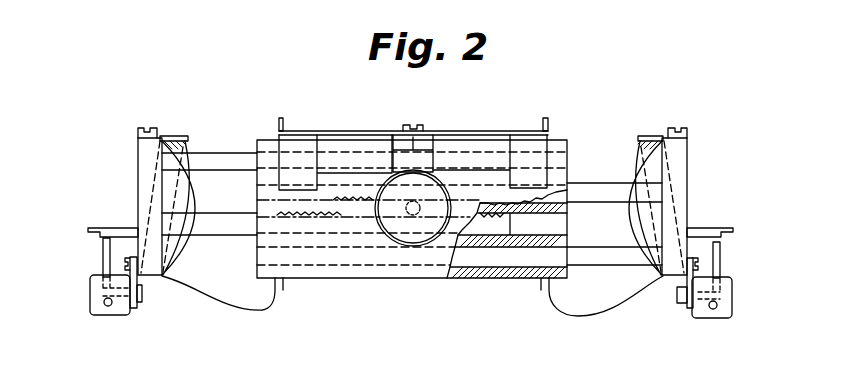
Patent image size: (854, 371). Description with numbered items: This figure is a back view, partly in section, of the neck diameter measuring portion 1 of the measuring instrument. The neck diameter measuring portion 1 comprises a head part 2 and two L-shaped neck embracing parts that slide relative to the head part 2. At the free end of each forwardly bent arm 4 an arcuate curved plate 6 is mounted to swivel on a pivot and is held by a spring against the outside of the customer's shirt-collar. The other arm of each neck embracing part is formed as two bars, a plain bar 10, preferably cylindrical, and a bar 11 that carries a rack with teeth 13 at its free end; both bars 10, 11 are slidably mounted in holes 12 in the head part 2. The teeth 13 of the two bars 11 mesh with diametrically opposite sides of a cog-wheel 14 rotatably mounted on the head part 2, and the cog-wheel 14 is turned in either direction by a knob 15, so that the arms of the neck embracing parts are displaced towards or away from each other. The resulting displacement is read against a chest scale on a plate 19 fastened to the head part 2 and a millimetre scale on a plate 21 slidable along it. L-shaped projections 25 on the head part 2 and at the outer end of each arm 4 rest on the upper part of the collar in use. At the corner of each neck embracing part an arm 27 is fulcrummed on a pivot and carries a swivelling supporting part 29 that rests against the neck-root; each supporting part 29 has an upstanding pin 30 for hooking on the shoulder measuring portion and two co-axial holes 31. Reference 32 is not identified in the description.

The neck diameter measuring portion 1 is at (332, 290).
The head part 2 is at (532, 270).
The forwardly bent arm 4 is at (142, 175).
The arcuate curved plate 6 is at (173, 187).
The plain bar 10 is at (235, 155).
The rack bar 11 is at (220, 225).
The hole 12 is at (287, 258).
The teeth 13 is at (352, 200).
The cog-wheel 14 is at (422, 200).
The knob 15 is at (412, 233).
The plate 19 is at (403, 145).
The plate 21 is at (502, 135).
The projection 25 is at (180, 136).
The arm 27 is at (137, 282).
The supporting part 29 is at (123, 315).
The upstanding pin 30 is at (724, 258).
The co-axial hole 31 is at (107, 307).
The support bar 32 is at (95, 228).